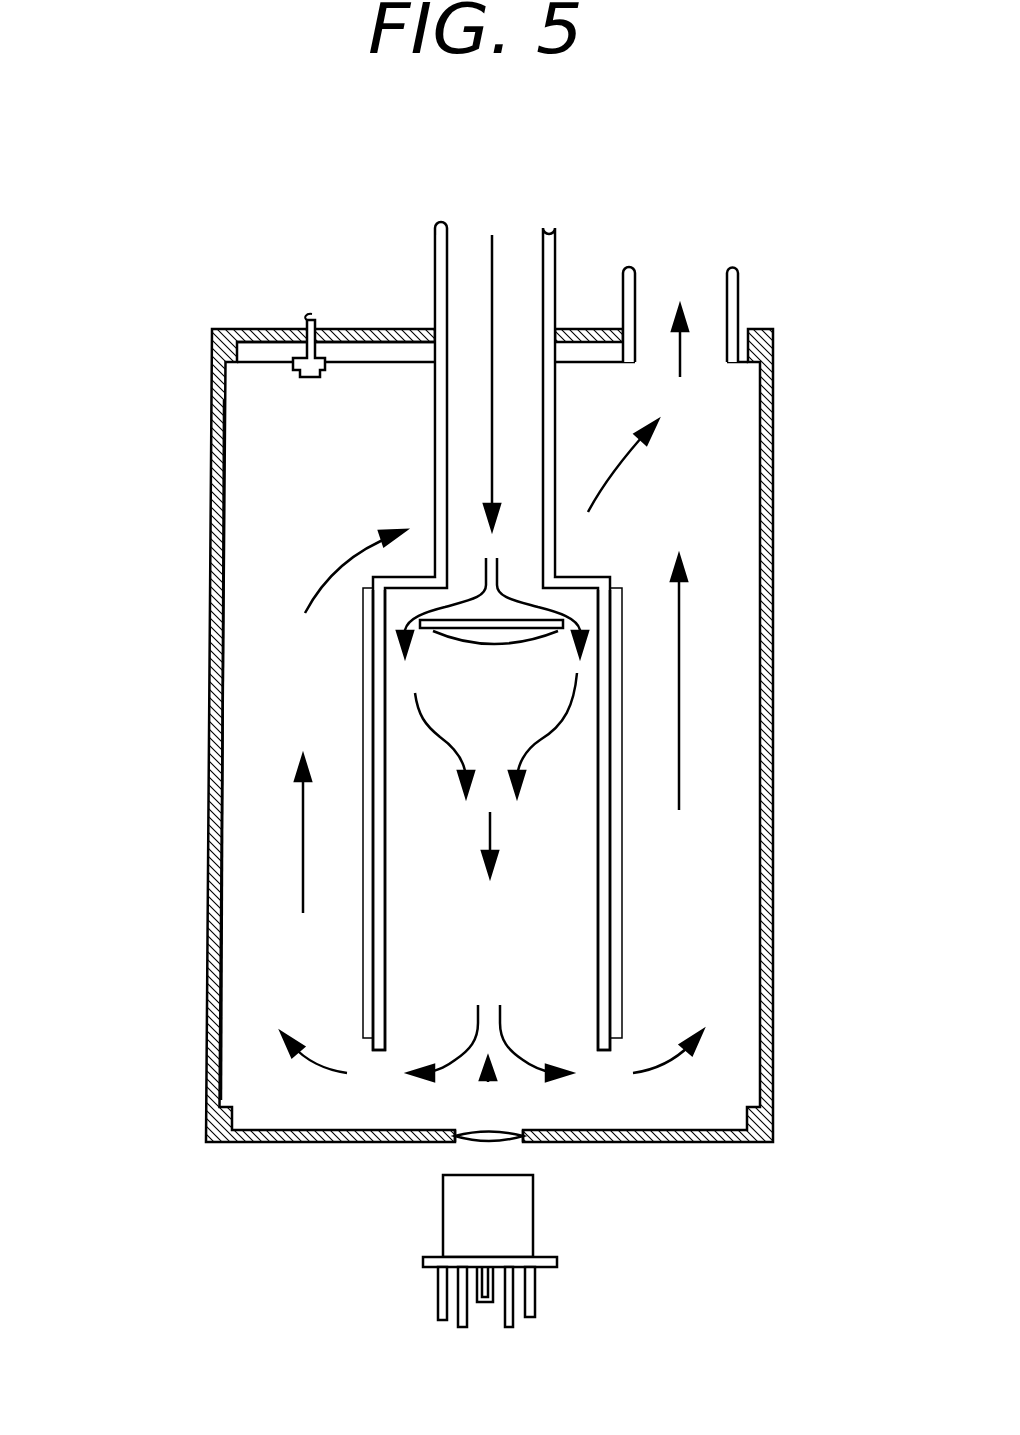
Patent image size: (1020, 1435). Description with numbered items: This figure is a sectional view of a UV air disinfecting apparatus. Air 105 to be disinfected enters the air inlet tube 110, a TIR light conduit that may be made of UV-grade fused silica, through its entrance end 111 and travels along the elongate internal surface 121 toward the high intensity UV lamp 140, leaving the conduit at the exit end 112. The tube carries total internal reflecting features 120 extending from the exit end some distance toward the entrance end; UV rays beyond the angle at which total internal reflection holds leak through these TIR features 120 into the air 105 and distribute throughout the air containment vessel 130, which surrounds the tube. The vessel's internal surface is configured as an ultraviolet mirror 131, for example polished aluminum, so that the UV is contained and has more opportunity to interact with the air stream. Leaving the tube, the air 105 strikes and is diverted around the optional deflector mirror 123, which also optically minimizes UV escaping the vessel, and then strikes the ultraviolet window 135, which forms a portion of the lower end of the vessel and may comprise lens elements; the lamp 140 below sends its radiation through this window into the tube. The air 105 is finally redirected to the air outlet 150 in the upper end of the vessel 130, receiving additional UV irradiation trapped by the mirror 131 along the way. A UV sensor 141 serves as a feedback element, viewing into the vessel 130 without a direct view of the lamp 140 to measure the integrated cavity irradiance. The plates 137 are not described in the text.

The air 105 is at (350, 527).
The air inlet tube 110 is at (437, 236).
The entrance end 111 is at (555, 197).
The exit end 112 is at (488, 1080).
The total internal reflecting features 120 is at (622, 800).
The elongate internal surface 121 is at (598, 871).
The deflector mirror 123 is at (483, 638).
The air containment vessel 130 is at (199, 463).
The ultraviolet mirror 131 is at (222, 733).
The ultraviolet window 135 is at (487, 1143).
The plates 137 is at (260, 350).
The high intensity UV lamp 140 is at (440, 1208).
The UV sensor 141 is at (300, 365).
The air outlet 150 is at (629, 270).